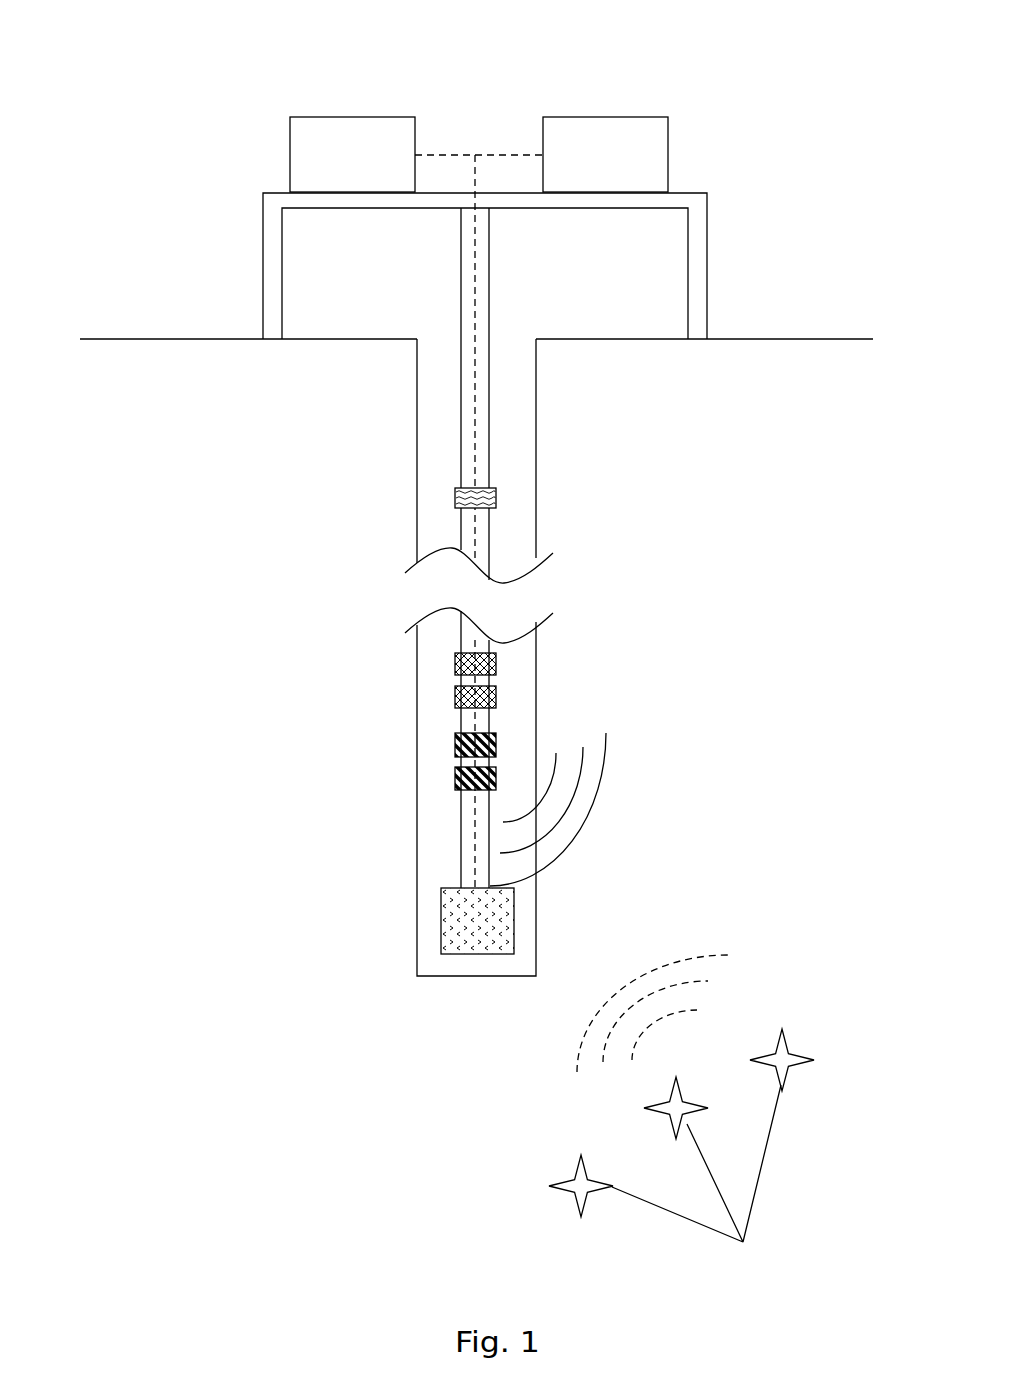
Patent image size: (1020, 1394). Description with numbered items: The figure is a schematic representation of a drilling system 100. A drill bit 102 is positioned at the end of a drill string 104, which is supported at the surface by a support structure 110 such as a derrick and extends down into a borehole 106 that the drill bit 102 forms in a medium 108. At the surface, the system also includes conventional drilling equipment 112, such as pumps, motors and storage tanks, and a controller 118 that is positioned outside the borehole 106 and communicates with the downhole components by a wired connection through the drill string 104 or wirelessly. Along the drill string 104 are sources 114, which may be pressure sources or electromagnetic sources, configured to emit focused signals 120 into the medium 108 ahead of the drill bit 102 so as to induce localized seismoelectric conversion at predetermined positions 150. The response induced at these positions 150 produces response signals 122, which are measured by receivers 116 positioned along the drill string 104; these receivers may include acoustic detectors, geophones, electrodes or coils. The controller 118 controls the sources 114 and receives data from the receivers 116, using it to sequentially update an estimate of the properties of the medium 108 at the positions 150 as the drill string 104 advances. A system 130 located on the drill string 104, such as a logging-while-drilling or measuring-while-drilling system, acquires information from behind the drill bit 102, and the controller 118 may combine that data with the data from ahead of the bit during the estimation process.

The drilling system 100 is at (193, 139).
The drill bit 102 is at (441, 945).
The drill string 104 is at (461, 378).
The borehole 106 is at (433, 523).
The medium 108 is at (714, 550).
The support structure 110 is at (263, 262).
The conventional drilling equipment 112 is at (358, 117).
The sources 114 is at (455, 777).
The receivers 116 is at (455, 692).
The controller 118 is at (599, 114).
The signals 120 is at (622, 781).
The response signals 122 is at (748, 958).
The system 130 is at (496, 495).
The predetermined positions 150 is at (681, 1159).